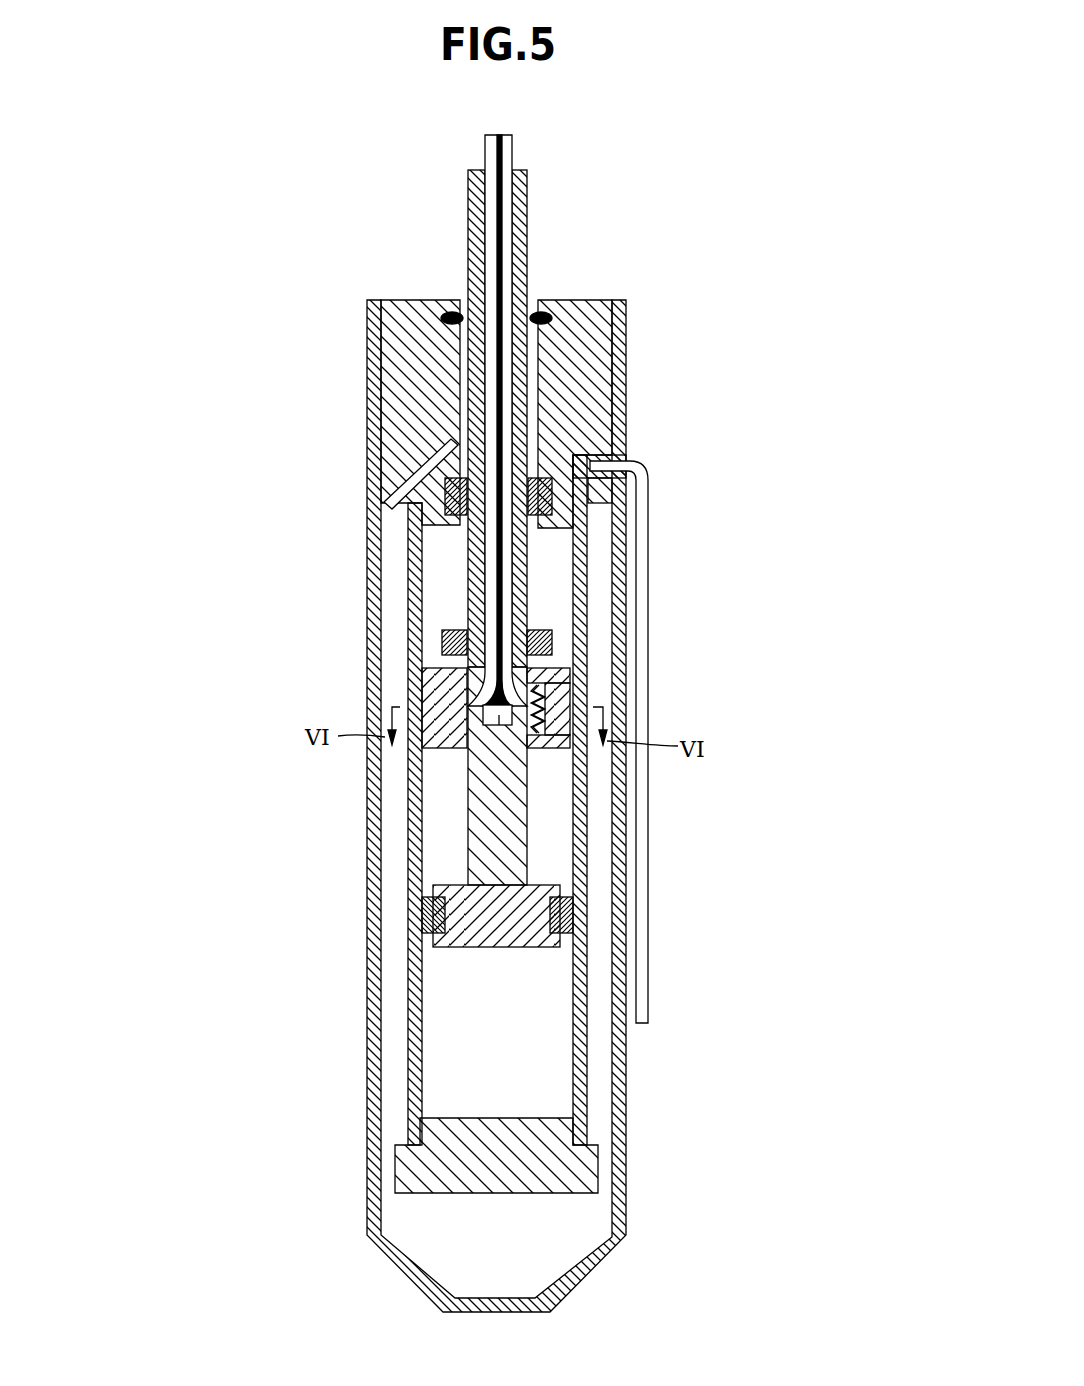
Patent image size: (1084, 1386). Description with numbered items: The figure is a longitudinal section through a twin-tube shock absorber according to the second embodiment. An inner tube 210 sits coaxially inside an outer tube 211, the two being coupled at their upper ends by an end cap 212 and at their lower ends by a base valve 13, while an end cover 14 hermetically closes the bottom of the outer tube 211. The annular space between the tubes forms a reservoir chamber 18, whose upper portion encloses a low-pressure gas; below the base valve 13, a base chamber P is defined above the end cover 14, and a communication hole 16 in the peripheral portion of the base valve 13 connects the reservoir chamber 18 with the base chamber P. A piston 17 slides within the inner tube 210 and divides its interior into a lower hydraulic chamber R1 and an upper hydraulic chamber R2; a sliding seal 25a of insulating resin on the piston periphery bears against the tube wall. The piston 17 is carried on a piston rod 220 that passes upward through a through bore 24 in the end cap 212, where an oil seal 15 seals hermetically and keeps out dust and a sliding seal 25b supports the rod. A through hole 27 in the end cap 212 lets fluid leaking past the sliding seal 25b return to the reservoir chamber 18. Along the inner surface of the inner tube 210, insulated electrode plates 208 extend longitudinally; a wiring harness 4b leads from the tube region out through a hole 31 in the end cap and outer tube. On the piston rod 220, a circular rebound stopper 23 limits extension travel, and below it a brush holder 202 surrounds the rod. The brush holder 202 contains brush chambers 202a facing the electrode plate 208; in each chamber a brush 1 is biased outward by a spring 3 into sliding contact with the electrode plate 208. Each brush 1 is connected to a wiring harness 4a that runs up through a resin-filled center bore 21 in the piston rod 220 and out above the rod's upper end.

The brush 1 is at (562, 697).
The spring 3 is at (558, 672).
The wiring harness 4a is at (480, 152).
The wiring harness 4b is at (648, 1026).
The base valve 13 is at (565, 1163).
The end cover 14 is at (603, 1275).
The oil seal 15 is at (443, 318).
The communication hole 16 is at (605, 1180).
The piston 17 is at (505, 950).
The reservoir chamber 18 is at (395, 963).
The center bore 21 is at (497, 716).
The rebound stopper 23 is at (447, 641).
The through bore 24 is at (540, 348).
The sliding seal 25a is at (565, 915).
The sliding seal 25b is at (548, 500).
The through hole 27 is at (415, 477).
The hole 31 is at (590, 462).
The brush holder 202 is at (445, 696).
The brush chamber 202a is at (547, 748).
The electrode plate 208 is at (558, 818).
The inner tube 210 is at (413, 1018).
The outer tube 211 is at (378, 1048).
The end cap 212 is at (592, 387).
The piston rod 220 is at (488, 855).
The base chamber P is at (410, 1226).
The lower hydraulic chamber R1 is at (455, 1093).
The upper hydraulic chamber R2 is at (447, 818).